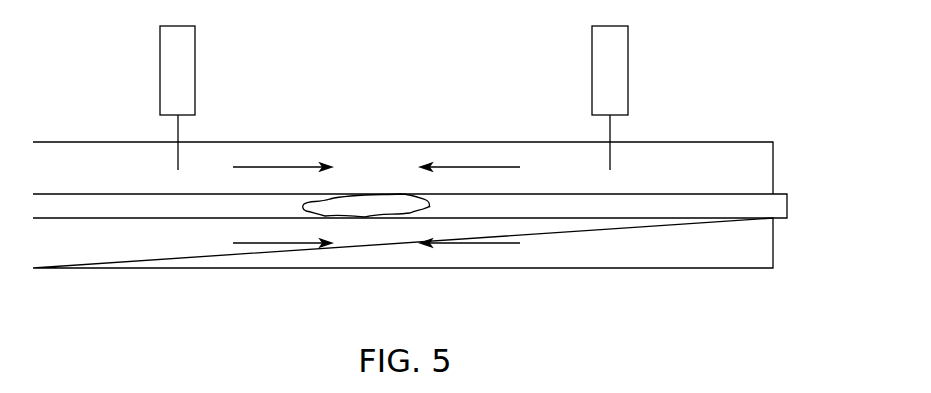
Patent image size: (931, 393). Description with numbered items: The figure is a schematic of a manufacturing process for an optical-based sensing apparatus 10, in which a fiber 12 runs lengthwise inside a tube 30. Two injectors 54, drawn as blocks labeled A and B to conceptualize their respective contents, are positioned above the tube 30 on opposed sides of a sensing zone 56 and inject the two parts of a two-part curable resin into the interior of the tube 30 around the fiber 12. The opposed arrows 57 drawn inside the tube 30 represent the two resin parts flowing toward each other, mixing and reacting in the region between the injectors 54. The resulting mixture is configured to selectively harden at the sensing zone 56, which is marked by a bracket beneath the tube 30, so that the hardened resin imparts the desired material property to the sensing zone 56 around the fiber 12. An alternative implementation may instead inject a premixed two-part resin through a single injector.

The system 10 is at (357, 57).
The fiber 12 is at (788, 206).
The tube 30 is at (372, 141).
The injectors 54 is at (196, 70).
The sensing zone 56 is at (318, 285).
The opposed arrows 57 is at (275, 165).